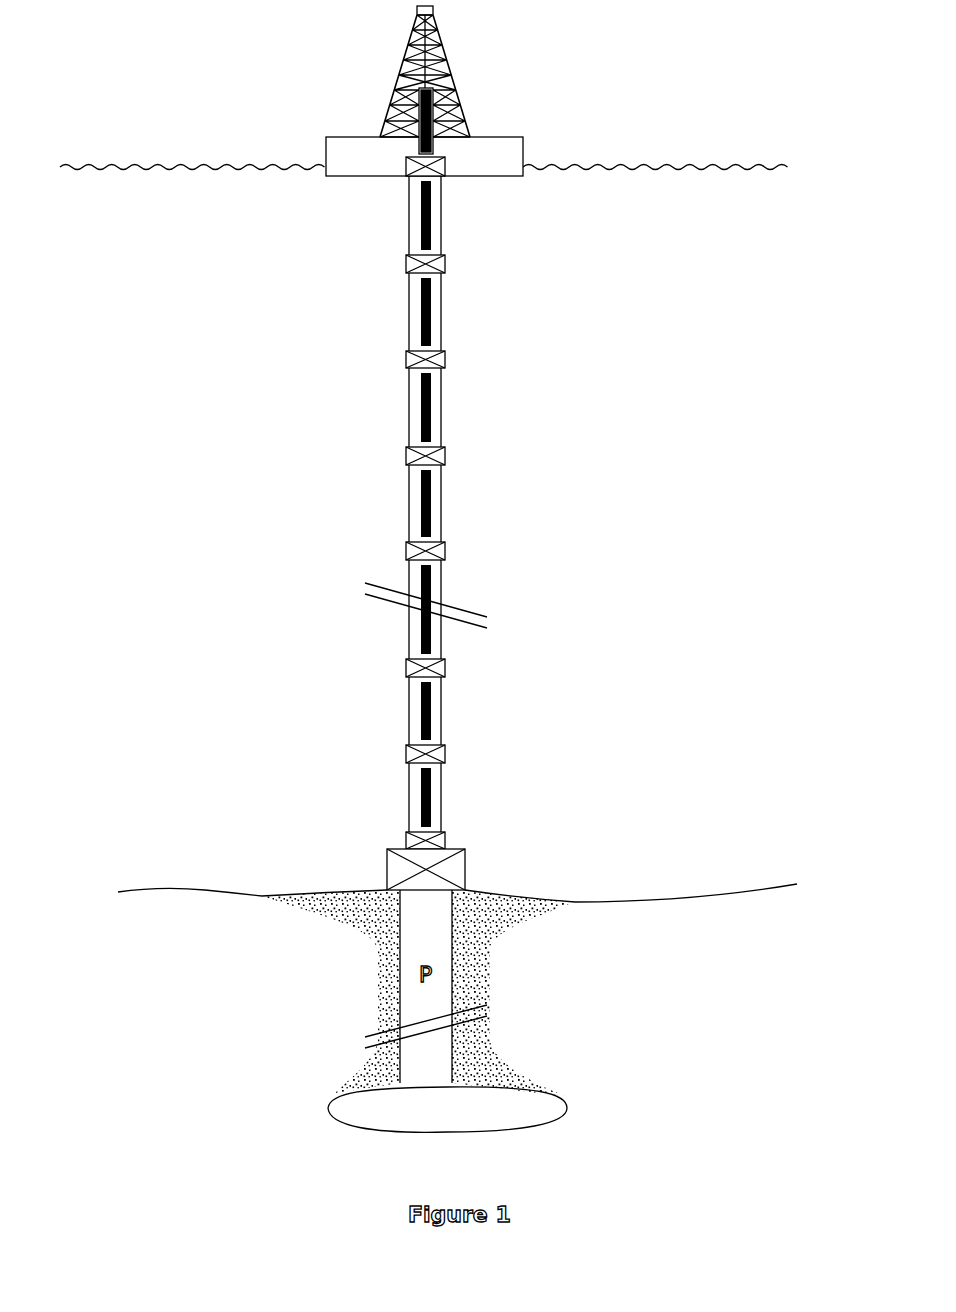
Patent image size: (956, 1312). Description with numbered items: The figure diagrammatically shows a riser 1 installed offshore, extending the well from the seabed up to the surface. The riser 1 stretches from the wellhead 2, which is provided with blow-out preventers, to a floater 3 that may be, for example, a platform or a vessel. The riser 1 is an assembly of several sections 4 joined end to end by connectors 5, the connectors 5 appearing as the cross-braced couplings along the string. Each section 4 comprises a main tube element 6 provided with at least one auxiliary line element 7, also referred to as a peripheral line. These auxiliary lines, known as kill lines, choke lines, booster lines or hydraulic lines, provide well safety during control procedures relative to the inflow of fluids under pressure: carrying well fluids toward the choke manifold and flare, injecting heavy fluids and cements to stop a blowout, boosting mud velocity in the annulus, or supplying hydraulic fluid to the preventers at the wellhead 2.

The riser 1 is at (242, 268).
The wellhead 2 is at (466, 866).
The floater 3 is at (523, 150).
The section 4 is at (367, 265).
The connector 5 is at (453, 551).
The main tube element 6 is at (436, 508).
The auxiliary line element 7 is at (442, 414).